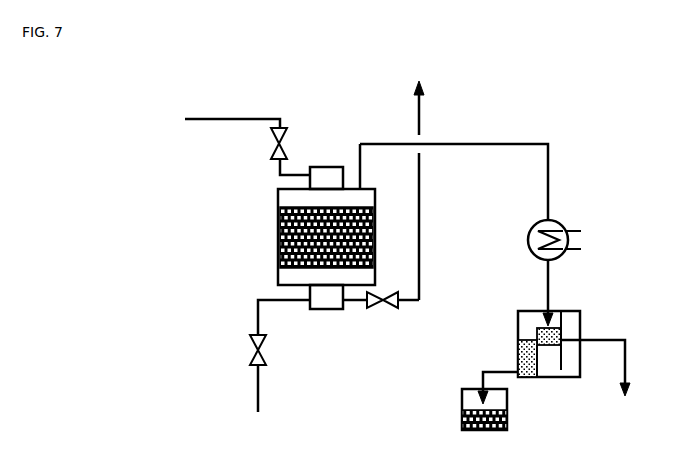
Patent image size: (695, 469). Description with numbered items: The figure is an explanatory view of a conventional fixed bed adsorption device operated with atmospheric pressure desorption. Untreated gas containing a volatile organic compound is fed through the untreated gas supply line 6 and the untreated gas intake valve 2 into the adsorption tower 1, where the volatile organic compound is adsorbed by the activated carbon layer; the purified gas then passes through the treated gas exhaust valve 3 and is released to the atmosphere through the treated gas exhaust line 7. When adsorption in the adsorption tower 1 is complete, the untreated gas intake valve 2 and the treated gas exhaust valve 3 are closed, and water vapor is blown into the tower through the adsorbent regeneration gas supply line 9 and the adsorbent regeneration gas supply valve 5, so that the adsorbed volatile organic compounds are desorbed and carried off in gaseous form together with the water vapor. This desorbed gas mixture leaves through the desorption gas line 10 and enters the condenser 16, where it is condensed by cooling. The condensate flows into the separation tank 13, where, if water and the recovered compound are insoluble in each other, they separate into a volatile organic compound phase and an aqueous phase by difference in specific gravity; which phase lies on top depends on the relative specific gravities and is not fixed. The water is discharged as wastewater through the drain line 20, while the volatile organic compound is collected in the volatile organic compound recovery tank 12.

The adsorption tower 1 is at (278, 240).
The untreated gas intake valve 2 is at (270, 145).
The treated gas exhaust valve 3 is at (386, 308).
The adsorbent regeneration gas supply valve 5 is at (250, 350).
The untreated gas supply line 6 is at (219, 119).
The treated gas exhaust line 7 is at (419, 105).
The adsorbent regeneration gas supply line 9 is at (258, 390).
The desorption gas line 10 is at (497, 143).
The volatile organic compound recovery tank 12 is at (462, 410).
The separation tank 13 is at (518, 330).
The condenser 16 is at (534, 229).
The drain line 20 is at (625, 362).